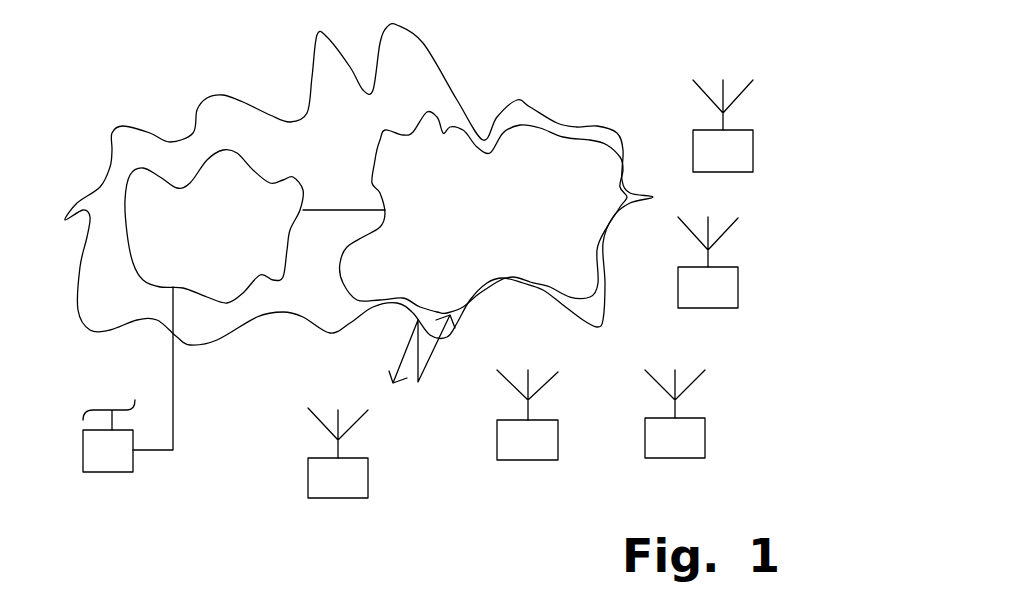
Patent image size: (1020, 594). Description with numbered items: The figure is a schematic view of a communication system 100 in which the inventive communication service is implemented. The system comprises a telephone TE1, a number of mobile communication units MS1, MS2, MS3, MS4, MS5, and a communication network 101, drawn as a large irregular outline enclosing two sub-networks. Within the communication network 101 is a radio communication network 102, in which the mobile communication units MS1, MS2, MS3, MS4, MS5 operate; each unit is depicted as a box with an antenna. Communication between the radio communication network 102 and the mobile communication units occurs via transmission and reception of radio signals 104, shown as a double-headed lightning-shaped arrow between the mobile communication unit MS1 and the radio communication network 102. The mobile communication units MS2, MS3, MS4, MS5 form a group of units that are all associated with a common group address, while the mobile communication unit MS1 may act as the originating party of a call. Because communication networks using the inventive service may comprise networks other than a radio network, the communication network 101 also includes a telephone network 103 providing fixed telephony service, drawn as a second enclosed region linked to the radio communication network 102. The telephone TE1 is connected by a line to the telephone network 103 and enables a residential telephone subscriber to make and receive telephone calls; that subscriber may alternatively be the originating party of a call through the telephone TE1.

The communication system 100 is at (853, 75).
The communication network 101 is at (238, 82).
The radio communication network 102 is at (623, 148).
The telephone network 103 is at (152, 155).
The radio signals 104 is at (393, 383).
The telephone TE1 is at (100, 472).
The mobile communication unit MS1 is at (368, 490).
The mobile communication unit MS2 is at (558, 443).
The mobile communication unit MS3 is at (705, 437).
The mobile communication unit MS4 is at (738, 293).
The mobile communication unit MS5 is at (753, 143).